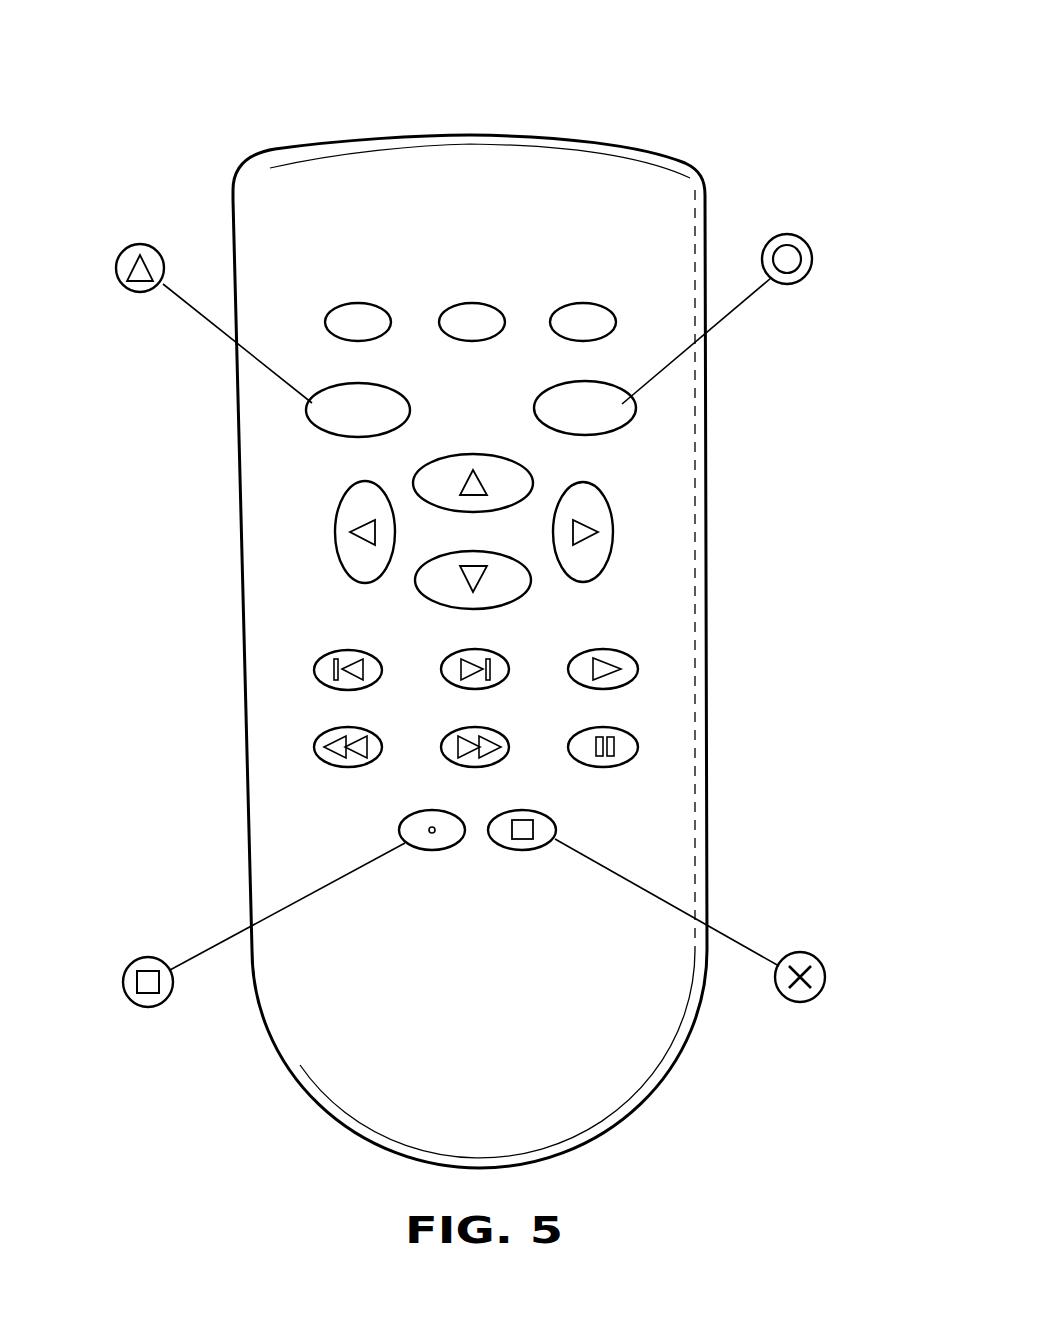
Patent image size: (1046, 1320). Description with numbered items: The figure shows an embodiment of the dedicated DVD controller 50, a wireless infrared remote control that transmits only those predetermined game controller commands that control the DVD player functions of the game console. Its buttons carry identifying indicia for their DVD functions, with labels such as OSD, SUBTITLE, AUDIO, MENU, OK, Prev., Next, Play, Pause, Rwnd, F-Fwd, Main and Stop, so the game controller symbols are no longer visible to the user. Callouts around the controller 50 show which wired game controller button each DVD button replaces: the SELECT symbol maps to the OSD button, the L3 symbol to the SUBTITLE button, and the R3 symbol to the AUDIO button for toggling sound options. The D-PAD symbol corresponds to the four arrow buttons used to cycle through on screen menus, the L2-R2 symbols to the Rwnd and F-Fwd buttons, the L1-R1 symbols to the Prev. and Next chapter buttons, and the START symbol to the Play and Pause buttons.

The dedicated DVD controller 50 is at (147, 112).
The Select button symbol SELECT is at (355, 257).
The L3-Button symbol L3 is at (468, 256).
The R3-Button symbol R3 is at (582, 257).
The D-Pad symbol D-PAD is at (472, 532).
The L2-Button and R2-Button symbols L2-R2 is at (440, 670).
The L1-Button and R1-Button symbols L1-R1 is at (440, 747).
The Start button symbol START is at (638, 669).